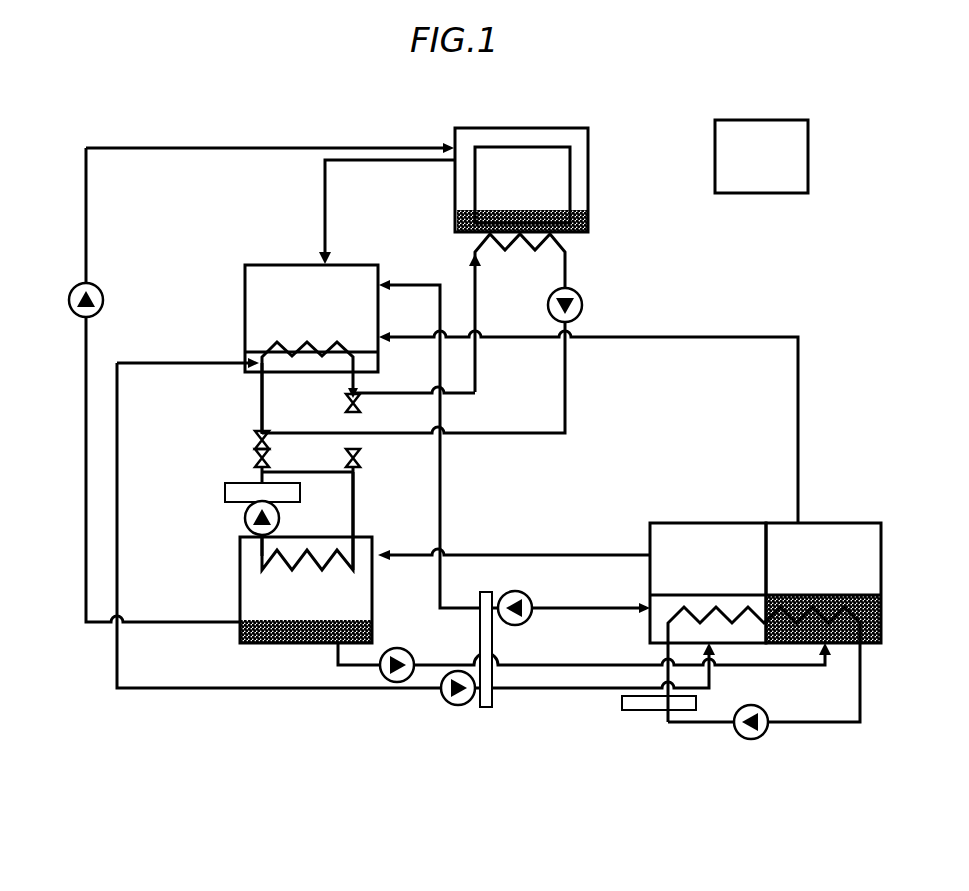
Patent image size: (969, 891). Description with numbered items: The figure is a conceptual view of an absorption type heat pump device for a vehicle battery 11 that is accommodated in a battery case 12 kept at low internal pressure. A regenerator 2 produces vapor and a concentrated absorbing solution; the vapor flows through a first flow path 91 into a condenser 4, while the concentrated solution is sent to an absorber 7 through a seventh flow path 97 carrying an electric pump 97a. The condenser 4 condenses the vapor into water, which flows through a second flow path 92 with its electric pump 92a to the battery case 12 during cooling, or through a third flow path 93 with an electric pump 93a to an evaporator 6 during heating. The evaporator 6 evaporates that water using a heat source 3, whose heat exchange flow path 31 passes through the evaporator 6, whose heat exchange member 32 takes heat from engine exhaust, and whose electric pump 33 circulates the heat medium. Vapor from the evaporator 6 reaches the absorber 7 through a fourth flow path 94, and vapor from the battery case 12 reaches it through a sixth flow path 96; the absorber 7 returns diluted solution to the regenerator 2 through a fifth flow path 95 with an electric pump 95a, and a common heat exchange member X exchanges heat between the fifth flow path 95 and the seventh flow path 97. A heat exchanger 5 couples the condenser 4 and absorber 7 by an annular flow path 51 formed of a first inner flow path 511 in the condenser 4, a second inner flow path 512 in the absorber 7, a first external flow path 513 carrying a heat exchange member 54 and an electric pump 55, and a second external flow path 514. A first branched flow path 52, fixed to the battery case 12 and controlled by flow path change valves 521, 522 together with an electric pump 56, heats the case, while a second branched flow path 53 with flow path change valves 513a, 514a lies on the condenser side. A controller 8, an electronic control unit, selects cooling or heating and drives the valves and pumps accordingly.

The regenerator 2 is at (690, 523).
The heat source 3 is at (740, 705).
The condenser 4 is at (238, 596).
The heat exchanger 5 is at (280, 466).
The evaporator 6 is at (850, 523).
The absorber 7 is at (243, 282).
The controller 8 is at (765, 120).
The battery 11 is at (548, 147).
The battery case 12 is at (505, 128).
The heat exchange flow path 31 is at (700, 726).
The heat exchange member 32 is at (643, 712).
The electric pump 33 is at (738, 736).
The annular flow path 51 is at (250, 558).
The first branched flow path 52 is at (568, 388).
The second branched flow path 53 is at (340, 474).
The heat exchange member 54 is at (223, 492).
The electric pump 55 is at (243, 518).
The electric pump 56 is at (586, 306).
The first flow path 91 is at (508, 553).
The second flow path 92 is at (262, 146).
The electric pump 92a is at (74, 290).
The third flow path 93 is at (340, 670).
The electric pump 93a is at (392, 683).
The fourth flow path 94 is at (726, 336).
The fifth flow path 95 is at (114, 522).
The electric pump 95a is at (456, 706).
The sixth flow path 96 is at (322, 196).
The seventh flow path 97 is at (590, 606).
The electric pump 97a is at (524, 596).
The first inner flow path 511 is at (260, 550).
The second inner flow path 512 is at (266, 346).
The first external flow path 513 is at (258, 390).
The flow path change valve 513a is at (254, 458).
The second external flow path 514 is at (356, 508).
The flow path change valve 514a is at (362, 458).
The flow path change valve 521 is at (254, 440).
The flow path change valve 522 is at (362, 403).
The common heat exchange member X is at (486, 709).